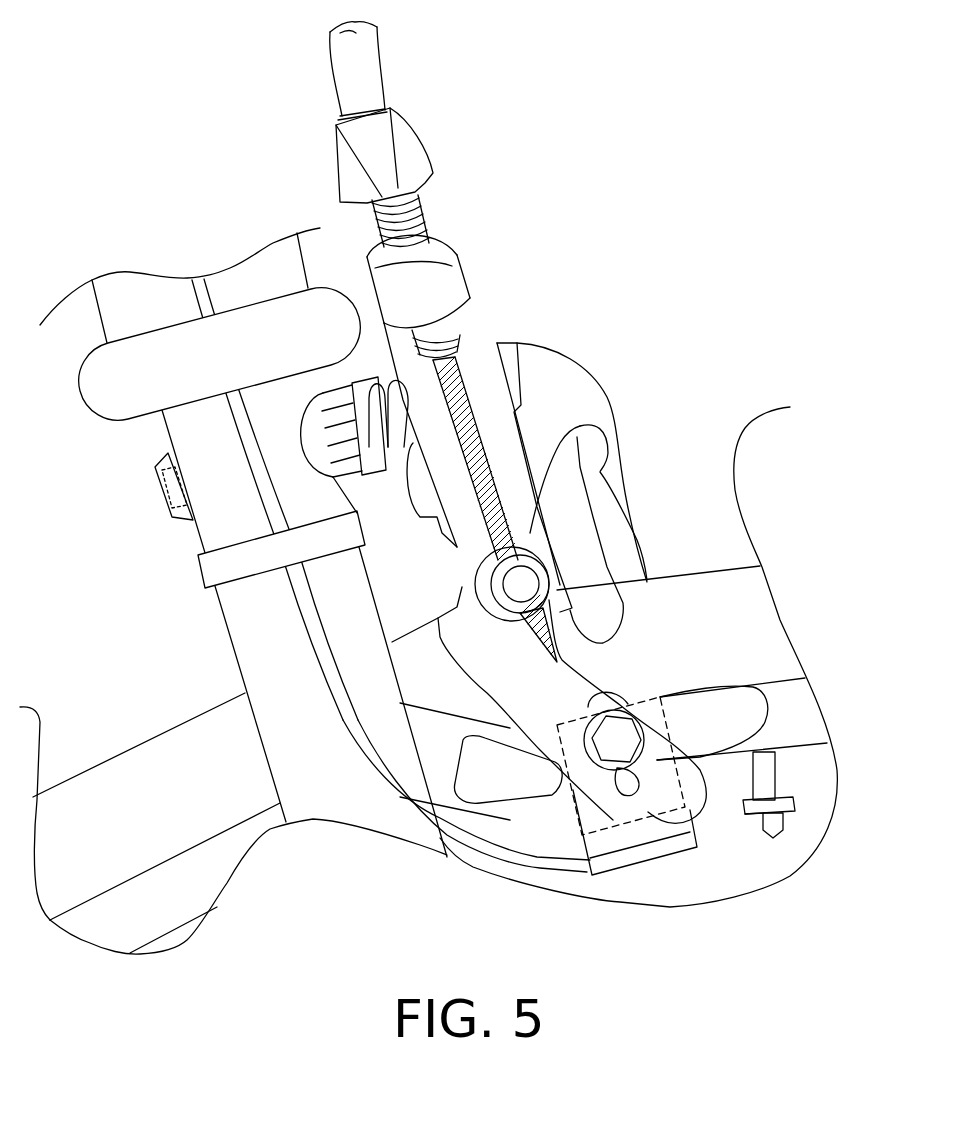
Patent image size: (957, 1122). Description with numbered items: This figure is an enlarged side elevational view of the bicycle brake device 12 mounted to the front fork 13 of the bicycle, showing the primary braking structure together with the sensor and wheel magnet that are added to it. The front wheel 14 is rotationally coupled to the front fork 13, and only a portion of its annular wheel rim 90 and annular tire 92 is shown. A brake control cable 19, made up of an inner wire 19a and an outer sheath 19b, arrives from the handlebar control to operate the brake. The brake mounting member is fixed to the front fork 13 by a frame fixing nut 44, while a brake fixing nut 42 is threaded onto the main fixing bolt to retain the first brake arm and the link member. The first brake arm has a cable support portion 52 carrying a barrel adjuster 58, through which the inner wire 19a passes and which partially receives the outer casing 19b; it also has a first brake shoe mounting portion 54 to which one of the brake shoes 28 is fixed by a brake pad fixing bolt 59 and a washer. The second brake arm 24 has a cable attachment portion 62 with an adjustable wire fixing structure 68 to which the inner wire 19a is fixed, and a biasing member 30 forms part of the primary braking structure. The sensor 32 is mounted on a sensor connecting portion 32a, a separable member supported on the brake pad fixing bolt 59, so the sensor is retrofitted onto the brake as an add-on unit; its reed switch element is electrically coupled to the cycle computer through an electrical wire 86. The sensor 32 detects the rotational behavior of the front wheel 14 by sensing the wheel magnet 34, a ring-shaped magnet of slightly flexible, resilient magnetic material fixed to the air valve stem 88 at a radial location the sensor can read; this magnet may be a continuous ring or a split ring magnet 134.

The bicycle brake device 12 is at (592, 223).
The front fork 13 is at (263, 630).
The front wheel 14 is at (677, 576).
The brake control cable 19 is at (378, 63).
The inner wire 19a is at (453, 563).
The outer sheath 19b is at (382, 88).
The second brake arm 24 is at (580, 362).
The brake shoes 28 is at (720, 692).
The biasing member 30 is at (397, 408).
The sensor 32 is at (623, 860).
The sensor connecting portion 32a is at (587, 823).
The wheel magnet 34 is at (748, 813).
The split ring magnet 134 is at (754, 813).
The brake fixing nut 42 is at (334, 390).
The frame fixing nut 44 is at (172, 457).
The cable support portion 52 is at (465, 262).
The first brake shoe mounting portion 54 is at (622, 687).
The barrel adjuster 58 is at (437, 162).
The brake pad fixing bolt 59 is at (610, 737).
The cable attachment portion 62 is at (577, 452).
The adjustable wire fixing structure 68 is at (557, 577).
The electrical wire 86 is at (380, 772).
The air valve stem 88 is at (770, 787).
The annular wheel rim 90 is at (155, 910).
The annular tire 92 is at (62, 897).